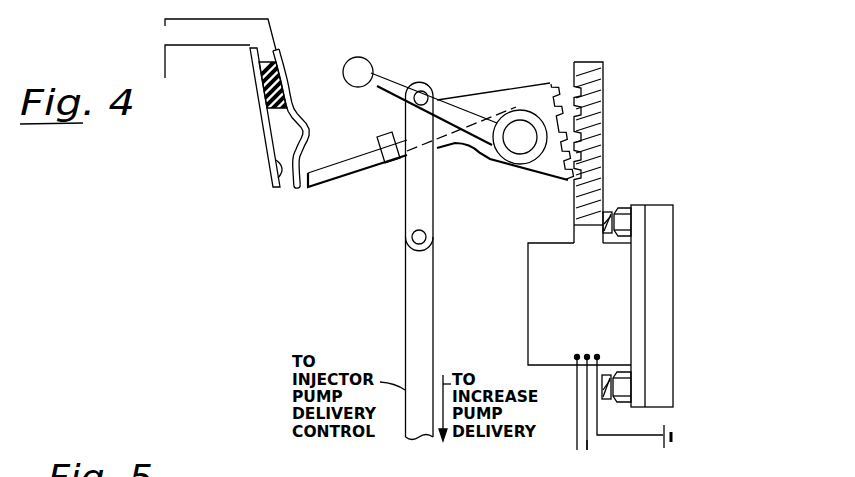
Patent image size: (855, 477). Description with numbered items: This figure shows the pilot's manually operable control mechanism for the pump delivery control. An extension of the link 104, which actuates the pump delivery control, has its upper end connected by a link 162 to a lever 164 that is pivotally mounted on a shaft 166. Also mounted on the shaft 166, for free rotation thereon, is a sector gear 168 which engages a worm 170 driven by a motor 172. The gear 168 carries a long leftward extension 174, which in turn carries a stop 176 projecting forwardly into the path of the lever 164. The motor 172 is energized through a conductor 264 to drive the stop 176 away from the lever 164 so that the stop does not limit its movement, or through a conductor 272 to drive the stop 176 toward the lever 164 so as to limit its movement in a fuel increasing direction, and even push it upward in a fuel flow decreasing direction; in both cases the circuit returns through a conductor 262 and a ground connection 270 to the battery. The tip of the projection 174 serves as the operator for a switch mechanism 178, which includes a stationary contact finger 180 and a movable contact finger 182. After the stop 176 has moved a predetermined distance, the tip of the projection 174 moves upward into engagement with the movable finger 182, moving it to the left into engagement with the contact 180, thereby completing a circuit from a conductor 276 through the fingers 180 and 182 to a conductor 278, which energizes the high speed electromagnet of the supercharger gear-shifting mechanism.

The link 104 is at (430, 304).
The link 162 is at (434, 215).
The lever 164 is at (446, 108).
The shaft 166 is at (517, 150).
The sector gear 168 is at (550, 82).
The worm 170 is at (603, 125).
The motor 172 is at (598, 286).
The leftward extension 174 is at (320, 185).
The stop 176 is at (377, 140).
The switch mechanism 178 is at (263, 164).
The stationary contact finger 180 is at (263, 133).
The movable contact finger 182 is at (292, 115).
The conductor 262 is at (640, 435).
The conductor 264 is at (587, 447).
The ground connection 270 is at (665, 426).
The conductor 272 is at (577, 380).
The conductor 276 is at (217, 50).
The conductor 278 is at (276, 33).